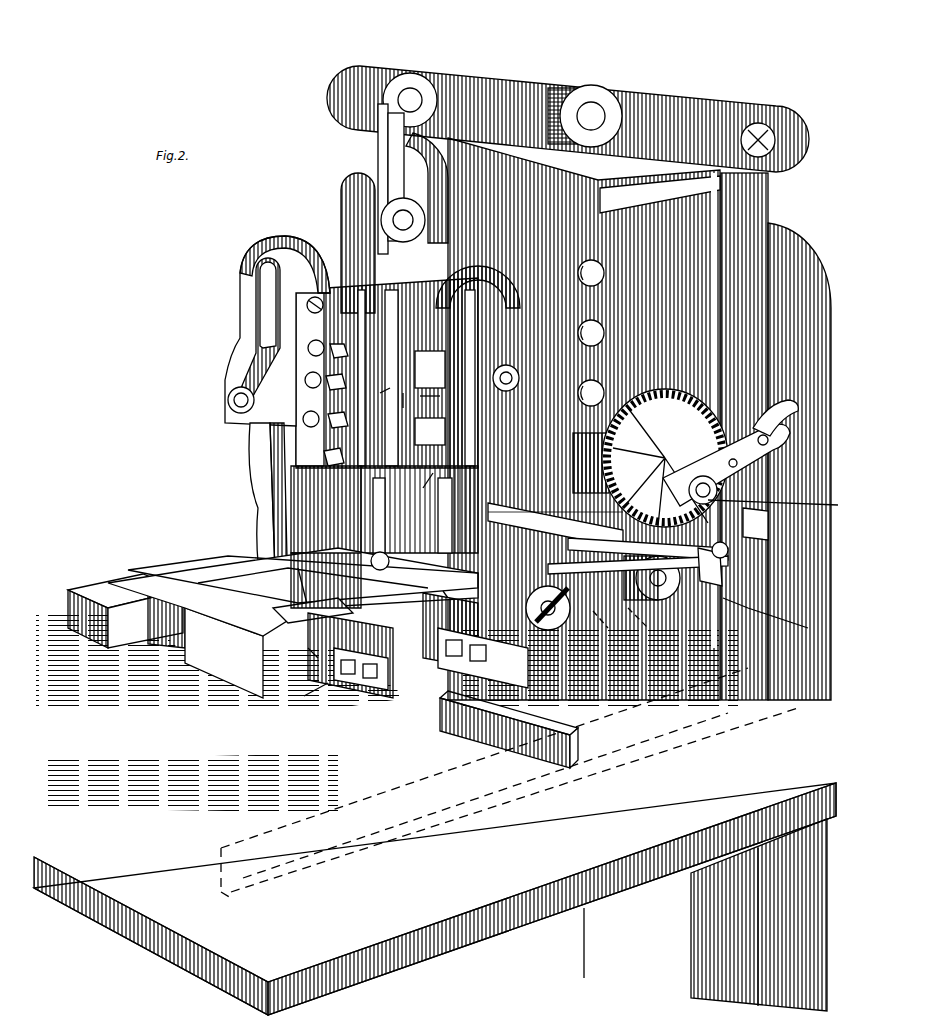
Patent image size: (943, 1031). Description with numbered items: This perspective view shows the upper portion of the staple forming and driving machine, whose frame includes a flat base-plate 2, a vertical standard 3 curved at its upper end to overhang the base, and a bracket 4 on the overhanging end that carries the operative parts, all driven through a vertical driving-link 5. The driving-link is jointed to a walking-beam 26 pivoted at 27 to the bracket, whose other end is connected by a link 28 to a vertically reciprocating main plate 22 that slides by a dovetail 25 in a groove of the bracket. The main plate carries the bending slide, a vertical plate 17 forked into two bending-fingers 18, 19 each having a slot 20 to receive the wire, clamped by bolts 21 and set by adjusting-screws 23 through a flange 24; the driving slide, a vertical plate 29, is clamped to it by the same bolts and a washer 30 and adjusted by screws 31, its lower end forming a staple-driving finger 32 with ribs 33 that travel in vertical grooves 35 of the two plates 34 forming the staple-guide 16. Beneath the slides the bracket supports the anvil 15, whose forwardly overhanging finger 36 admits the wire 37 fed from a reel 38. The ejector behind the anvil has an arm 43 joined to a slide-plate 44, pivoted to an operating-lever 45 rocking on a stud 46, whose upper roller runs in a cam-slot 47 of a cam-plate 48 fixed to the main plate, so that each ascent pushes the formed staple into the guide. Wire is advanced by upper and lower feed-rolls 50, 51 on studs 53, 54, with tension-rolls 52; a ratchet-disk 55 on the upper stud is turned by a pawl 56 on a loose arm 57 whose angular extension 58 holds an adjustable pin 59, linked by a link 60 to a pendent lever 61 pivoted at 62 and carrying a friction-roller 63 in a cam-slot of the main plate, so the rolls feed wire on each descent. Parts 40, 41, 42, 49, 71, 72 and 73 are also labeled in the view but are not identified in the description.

The base-plate 2 is at (538, 70).
The standard 3 is at (806, 300).
The bracket 4 is at (591, 310).
The driving-link 5 is at (750, 222).
The anvil 15 is at (372, 628).
The staple-guide 16 is at (350, 500).
The vertical plate 17 is at (370, 330).
The bending-finger 18 is at (416, 534).
The bending-finger 19 is at (430, 522).
The slot 20 is at (373, 555).
The bolts 21 is at (430, 398).
The main plate 22 is at (336, 205).
The adjusting-screws 23 is at (318, 445).
The flange 24 is at (352, 240).
The dovetail 25 is at (340, 308).
The walking-beam 26 is at (468, 72).
The pivot 27 is at (586, 78).
The link 28 is at (372, 138).
The vertical plate 29 is at (380, 380).
The washer 30 is at (430, 400).
The adjusting-screws 31 is at (325, 420).
The staple-driving finger 32 is at (413, 391).
The ribs 33 is at (303, 373).
The plates 34 is at (510, 380).
The vertical grooves 35 is at (398, 695).
The overhanging finger 36 is at (325, 599).
The wire 37 is at (601, 618).
The reel 38 is at (765, 613).
The foot 40 is at (212, 572).
The lug 41 is at (308, 649).
The lug 42 is at (440, 588).
The arm 43 is at (306, 692).
The slide-plate 44 is at (280, 479).
The operating-lever 45 is at (258, 525).
The stud 46 is at (246, 484).
The cam-slot 47 is at (248, 298).
The cam-plate 48 is at (288, 248).
The lug 49 is at (423, 480).
The upper feed-roll 50 is at (650, 458).
The lower feed-roll 51 is at (637, 618).
The tension-rolls 52 is at (640, 571).
The stud 53 is at (703, 490).
The stud 54 is at (530, 640).
The ratchet-disk 55 is at (726, 462).
The pawl 56 is at (752, 412).
The arm 57 is at (780, 500).
The angular extension 58 is at (714, 572).
The pin 59 is at (554, 603).
The link 60 is at (638, 556).
The pendent lever 61 is at (358, 162).
The pivot 62 is at (418, 165).
The friction-roller 63 is at (435, 815).
The plate 71 is at (563, 644).
The strip 72 is at (509, 783).
The guide bar 73 is at (509, 722).